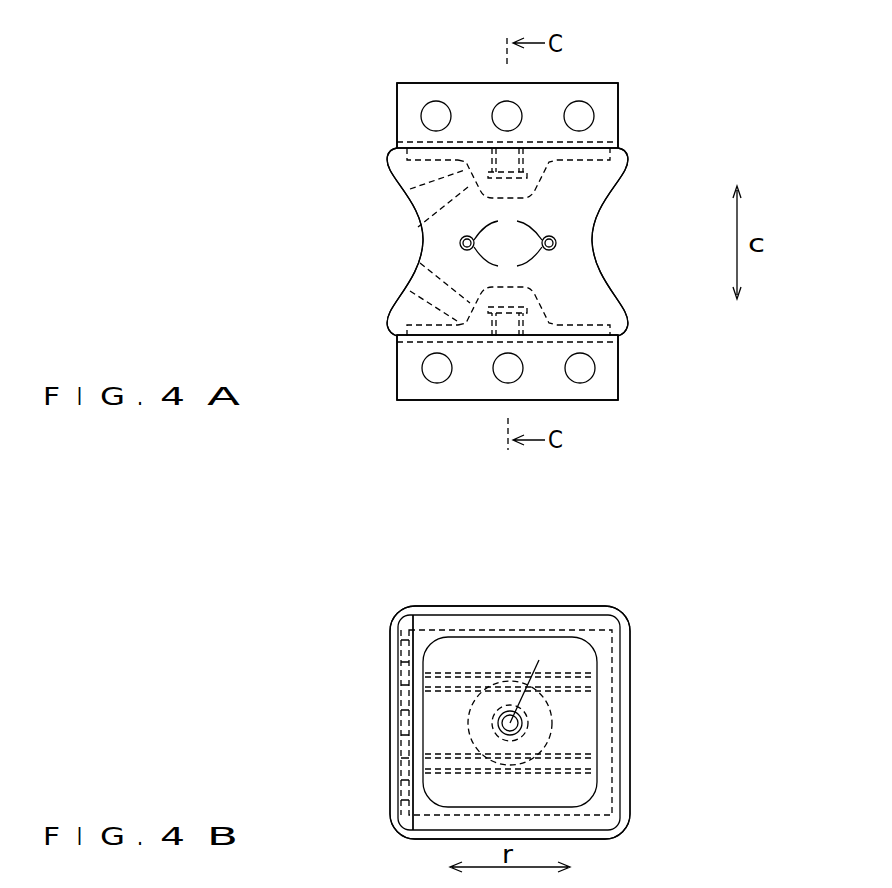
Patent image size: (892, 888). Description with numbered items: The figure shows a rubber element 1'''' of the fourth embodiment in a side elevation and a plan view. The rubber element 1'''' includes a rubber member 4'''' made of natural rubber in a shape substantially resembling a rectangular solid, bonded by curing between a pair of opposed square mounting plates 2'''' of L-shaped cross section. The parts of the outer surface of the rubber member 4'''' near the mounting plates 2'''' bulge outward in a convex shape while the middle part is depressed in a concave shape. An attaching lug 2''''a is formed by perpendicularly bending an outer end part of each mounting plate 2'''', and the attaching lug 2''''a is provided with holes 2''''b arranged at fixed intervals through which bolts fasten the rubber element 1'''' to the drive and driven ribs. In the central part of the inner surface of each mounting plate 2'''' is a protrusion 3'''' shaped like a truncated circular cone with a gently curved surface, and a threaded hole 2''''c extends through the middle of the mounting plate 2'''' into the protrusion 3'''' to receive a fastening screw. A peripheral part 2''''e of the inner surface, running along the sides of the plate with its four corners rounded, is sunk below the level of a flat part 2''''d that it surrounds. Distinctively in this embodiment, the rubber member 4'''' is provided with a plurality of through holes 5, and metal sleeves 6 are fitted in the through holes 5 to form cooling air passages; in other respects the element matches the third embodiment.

In FIG. 4A, the rubber element 1'''' is at (537, 204).
In FIG. 4B, the rubber element 1'''' is at (532, 677).
In FIG. 4A, the mounting plate 2'''' is at (542, 241).
In FIG. 4B, the mounting plate 2'''' is at (544, 722).
In FIG. 4A, the attaching lug 2''''a is at (552, 240).
In FIG. 4B, the attaching lug 2''''a is at (367, 717).
In FIG. 4A, the holes 2''''b is at (508, 241).
In FIG. 4B, the holes 2''''b is at (365, 720).
In FIG. 4A, the threaded hole 2''''c is at (397, 245).
In FIG. 4A, the flat part 2''''d is at (573, 242).
In FIG. 4B, the flat part 2''''d is at (510, 678).
In FIG. 4A, the peripheral part 2''''e is at (461, 237).
In FIG. 4B, the peripheral part 2''''e is at (510, 672).
In FIG. 4A, the protrusion 3'''' is at (444, 242).
In FIG. 4B, the protrusion 3'''' is at (575, 716).
In FIG. 4A, the rubber member 4'''' is at (525, 242).
In FIG. 4B, the rubber member 4'''' is at (510, 684).
In FIG. 4A, the through holes 5 is at (508, 265).
In FIG. 4B, the through holes 5 is at (598, 683).
In FIG. 4A, the metal sleeves 6 is at (508, 227).
In FIG. 4B, the metal sleeves 6 is at (582, 690).